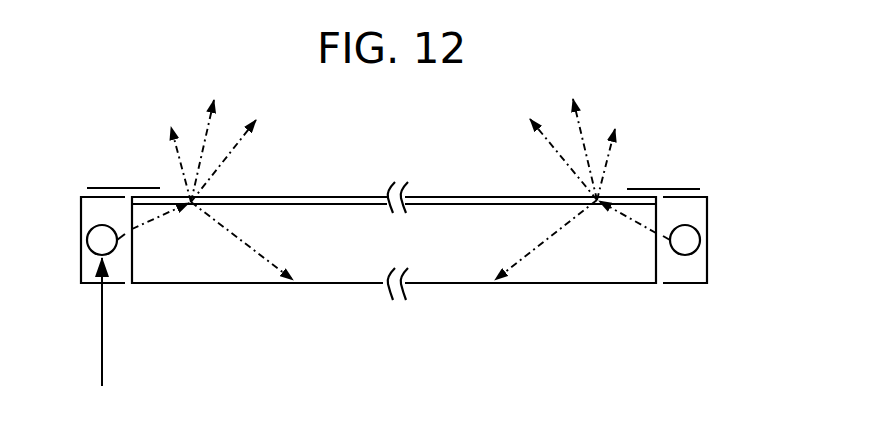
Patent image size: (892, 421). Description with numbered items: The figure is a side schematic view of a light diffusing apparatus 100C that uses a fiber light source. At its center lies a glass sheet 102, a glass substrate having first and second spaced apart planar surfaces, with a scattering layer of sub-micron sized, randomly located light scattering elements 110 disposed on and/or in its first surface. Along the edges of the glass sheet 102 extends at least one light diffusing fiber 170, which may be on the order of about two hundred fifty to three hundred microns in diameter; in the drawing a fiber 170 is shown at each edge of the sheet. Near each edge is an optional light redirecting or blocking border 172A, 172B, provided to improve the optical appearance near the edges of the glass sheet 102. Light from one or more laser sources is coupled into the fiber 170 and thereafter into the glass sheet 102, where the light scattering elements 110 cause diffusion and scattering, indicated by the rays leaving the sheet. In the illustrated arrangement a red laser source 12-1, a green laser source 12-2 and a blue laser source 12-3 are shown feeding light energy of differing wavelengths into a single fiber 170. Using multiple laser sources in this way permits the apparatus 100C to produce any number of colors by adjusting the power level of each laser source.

The light diffusing apparatus 100C is at (427, 135).
The glass sheet 102 is at (585, 275).
The light scattering elements 110 is at (283, 202).
The light diffusing fiber 170 is at (686, 254).
The light redirecting or blocking border 172A is at (707, 220).
The light redirecting or blocking border 172B is at (640, 183).
The red laser source 12-1 is at (106, 328).
The green laser source 12-2 is at (106, 357).
The blue laser source 12-3 is at (106, 385).